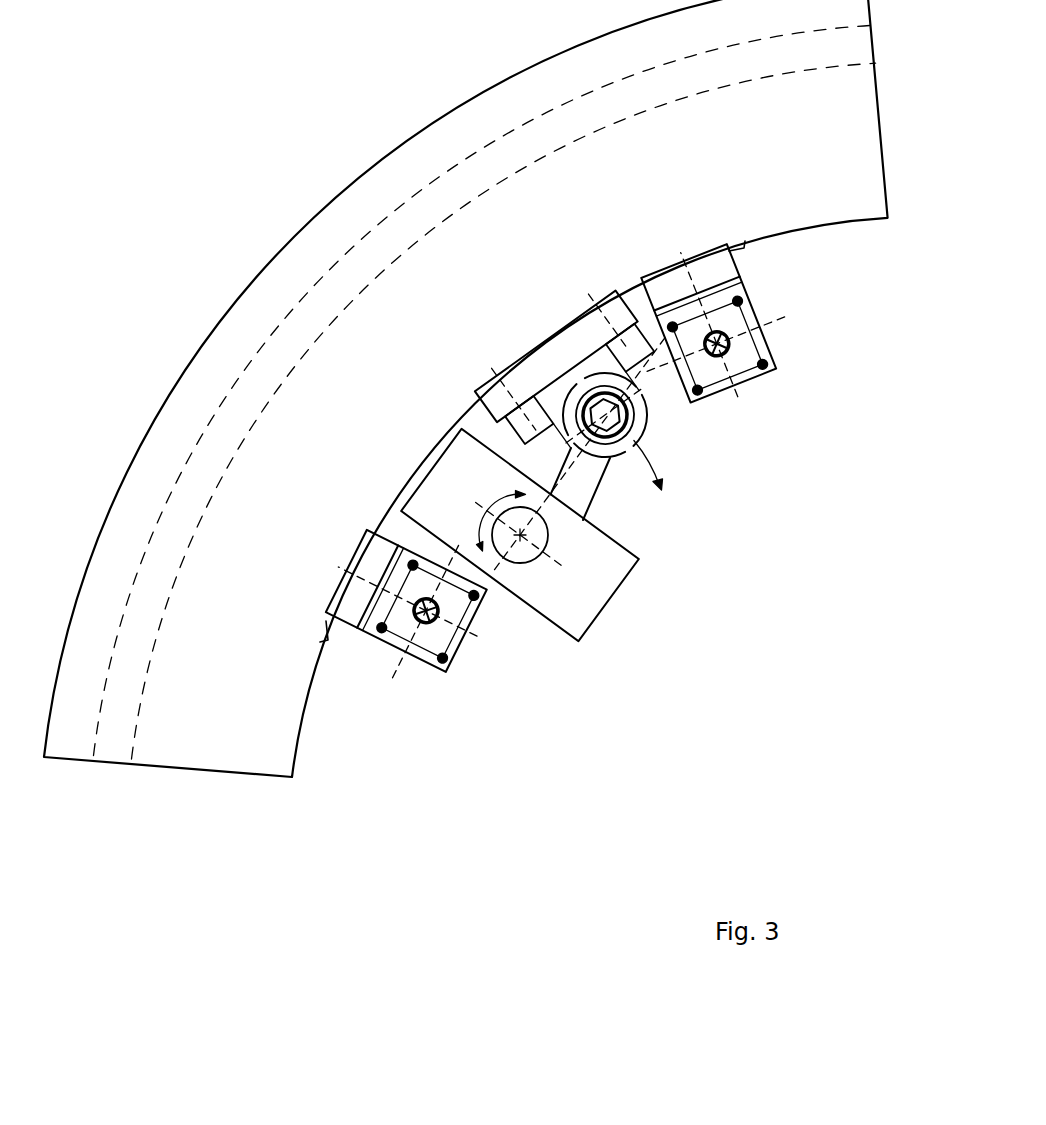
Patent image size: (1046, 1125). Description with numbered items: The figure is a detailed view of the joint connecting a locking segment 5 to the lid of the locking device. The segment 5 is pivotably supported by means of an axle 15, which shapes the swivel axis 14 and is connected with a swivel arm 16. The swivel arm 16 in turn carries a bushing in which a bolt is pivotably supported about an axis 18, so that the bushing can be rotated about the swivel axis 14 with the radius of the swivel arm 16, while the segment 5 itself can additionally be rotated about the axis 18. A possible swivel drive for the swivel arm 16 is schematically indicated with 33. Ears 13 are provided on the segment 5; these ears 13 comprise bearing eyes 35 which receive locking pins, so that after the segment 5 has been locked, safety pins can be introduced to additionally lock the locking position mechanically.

The segment 5 is at (360, 268).
The ear 13 is at (702, 272).
The swivel axis 14 is at (520, 537).
The axle 15 is at (505, 530).
The swivel arm 16 is at (580, 477).
The axis 18 is at (588, 398).
The swivel drive 33 is at (580, 607).
The bearing eye 35 is at (727, 343).